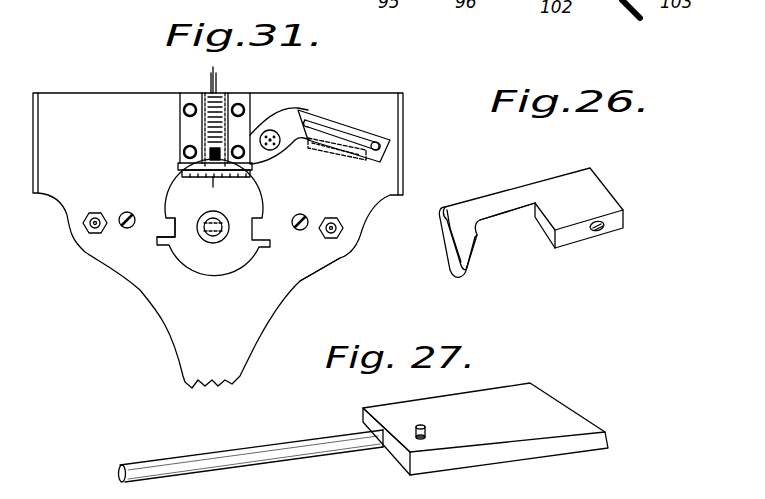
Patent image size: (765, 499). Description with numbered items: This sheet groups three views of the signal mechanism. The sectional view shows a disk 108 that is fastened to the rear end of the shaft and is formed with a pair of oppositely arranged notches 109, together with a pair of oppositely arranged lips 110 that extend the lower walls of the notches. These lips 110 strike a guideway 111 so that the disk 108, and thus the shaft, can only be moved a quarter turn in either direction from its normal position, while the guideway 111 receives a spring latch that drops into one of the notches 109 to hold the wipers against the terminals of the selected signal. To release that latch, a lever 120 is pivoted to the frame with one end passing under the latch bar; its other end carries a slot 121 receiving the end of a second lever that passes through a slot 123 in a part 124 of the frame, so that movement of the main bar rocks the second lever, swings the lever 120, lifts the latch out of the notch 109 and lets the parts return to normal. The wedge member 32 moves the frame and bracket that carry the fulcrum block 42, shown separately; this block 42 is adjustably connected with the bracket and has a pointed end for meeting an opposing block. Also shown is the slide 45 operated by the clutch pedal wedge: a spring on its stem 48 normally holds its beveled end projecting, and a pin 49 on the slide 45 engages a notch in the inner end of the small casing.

In FIG. 31, the wedge member 32 is at (209, 129).
In FIG. 26, the fulcrum block 42 is at (538, 167).
In FIG. 27, the slide 45 is at (553, 403).
In FIG. 27, the stem 48 is at (268, 446).
In FIG. 27, the pin 49 is at (427, 432).
In FIG. 31, the disk 108 is at (232, 266).
In FIG. 31, the notches 109 is at (285, 222).
In FIG. 31, the lips 110 is at (158, 243).
In FIG. 31, the guideway 111 is at (182, 138).
In FIG. 31, the lever 120 is at (295, 113).
In FIG. 31, the slot 121 is at (340, 130).
In FIG. 31, the slot 123 is at (320, 146).
In FIG. 31, the part of the frame 124 is at (362, 289).